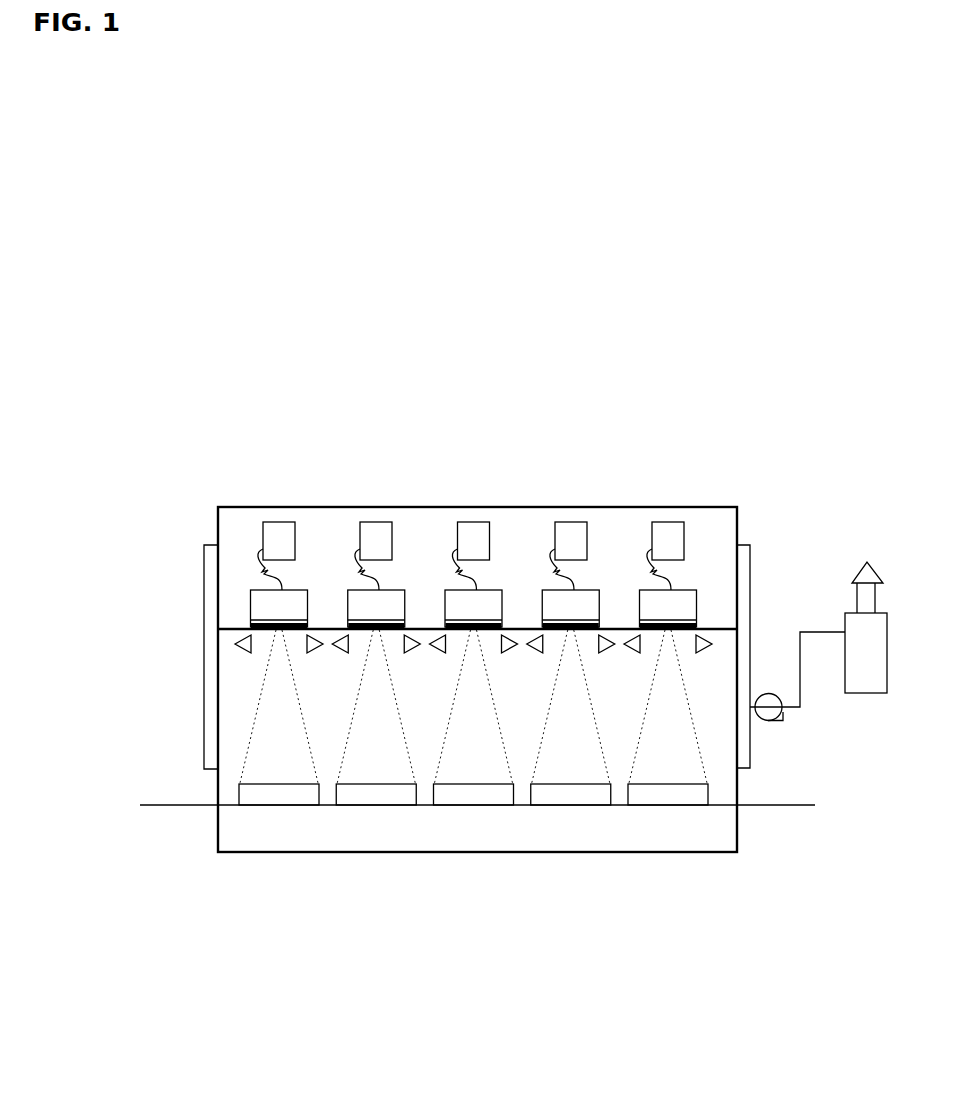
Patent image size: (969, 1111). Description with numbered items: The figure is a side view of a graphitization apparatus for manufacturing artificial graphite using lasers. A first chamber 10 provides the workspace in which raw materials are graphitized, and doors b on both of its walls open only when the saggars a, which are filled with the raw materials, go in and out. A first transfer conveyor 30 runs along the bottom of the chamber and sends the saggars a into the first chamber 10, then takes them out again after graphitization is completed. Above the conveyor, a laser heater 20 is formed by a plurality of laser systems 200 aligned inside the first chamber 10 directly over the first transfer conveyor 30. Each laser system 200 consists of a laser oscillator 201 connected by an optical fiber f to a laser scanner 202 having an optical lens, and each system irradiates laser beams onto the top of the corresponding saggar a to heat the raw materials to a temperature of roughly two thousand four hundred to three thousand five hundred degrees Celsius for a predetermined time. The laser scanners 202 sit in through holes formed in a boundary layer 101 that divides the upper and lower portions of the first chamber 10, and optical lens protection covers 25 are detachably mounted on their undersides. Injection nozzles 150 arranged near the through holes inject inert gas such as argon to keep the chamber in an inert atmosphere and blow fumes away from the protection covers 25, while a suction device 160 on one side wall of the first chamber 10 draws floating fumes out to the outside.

The first chamber 10 is at (280, 478).
The laser heater 20 is at (478, 500).
The laser system 200 is at (478, 501).
The laser oscillator 201 is at (568, 521).
The laser scanner 202 is at (600, 609).
The optical lens protection cover 25 is at (387, 631).
The injection nozzle 150 is at (630, 650).
The boundary layer 101 is at (718, 627).
The saggar a is at (477, 783).
The door b is at (203, 613).
The optical fiber f is at (259, 549).
The suction device 160 is at (775, 723).
The first transfer conveyor 30 is at (772, 840).